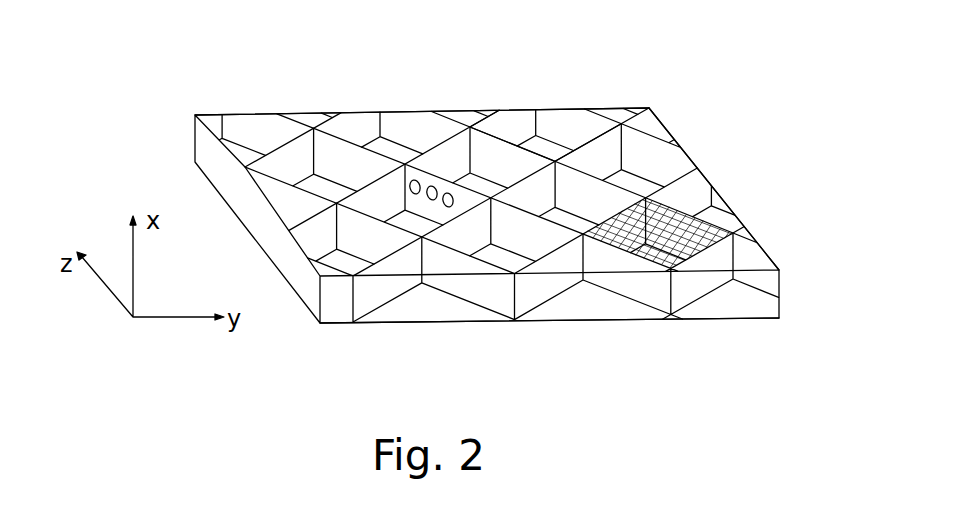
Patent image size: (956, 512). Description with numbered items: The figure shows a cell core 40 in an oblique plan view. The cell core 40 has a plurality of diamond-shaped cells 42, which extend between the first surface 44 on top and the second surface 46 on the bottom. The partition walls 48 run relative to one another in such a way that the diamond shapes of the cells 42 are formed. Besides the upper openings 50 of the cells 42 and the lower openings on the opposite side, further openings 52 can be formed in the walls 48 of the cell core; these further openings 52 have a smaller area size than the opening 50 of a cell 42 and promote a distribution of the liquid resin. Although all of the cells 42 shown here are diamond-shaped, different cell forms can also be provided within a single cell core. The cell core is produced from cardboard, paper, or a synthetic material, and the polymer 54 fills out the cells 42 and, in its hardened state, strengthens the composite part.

The cell core 40 is at (741, 196).
The diamond-shaped cells 42 is at (361, 133).
The first surface 44 is at (241, 106).
The second surface 46 is at (547, 336).
The partition walls 48 is at (683, 177).
The upper openings 50 is at (553, 135).
The further openings 52 is at (414, 180).
The polymer 54 is at (657, 257).